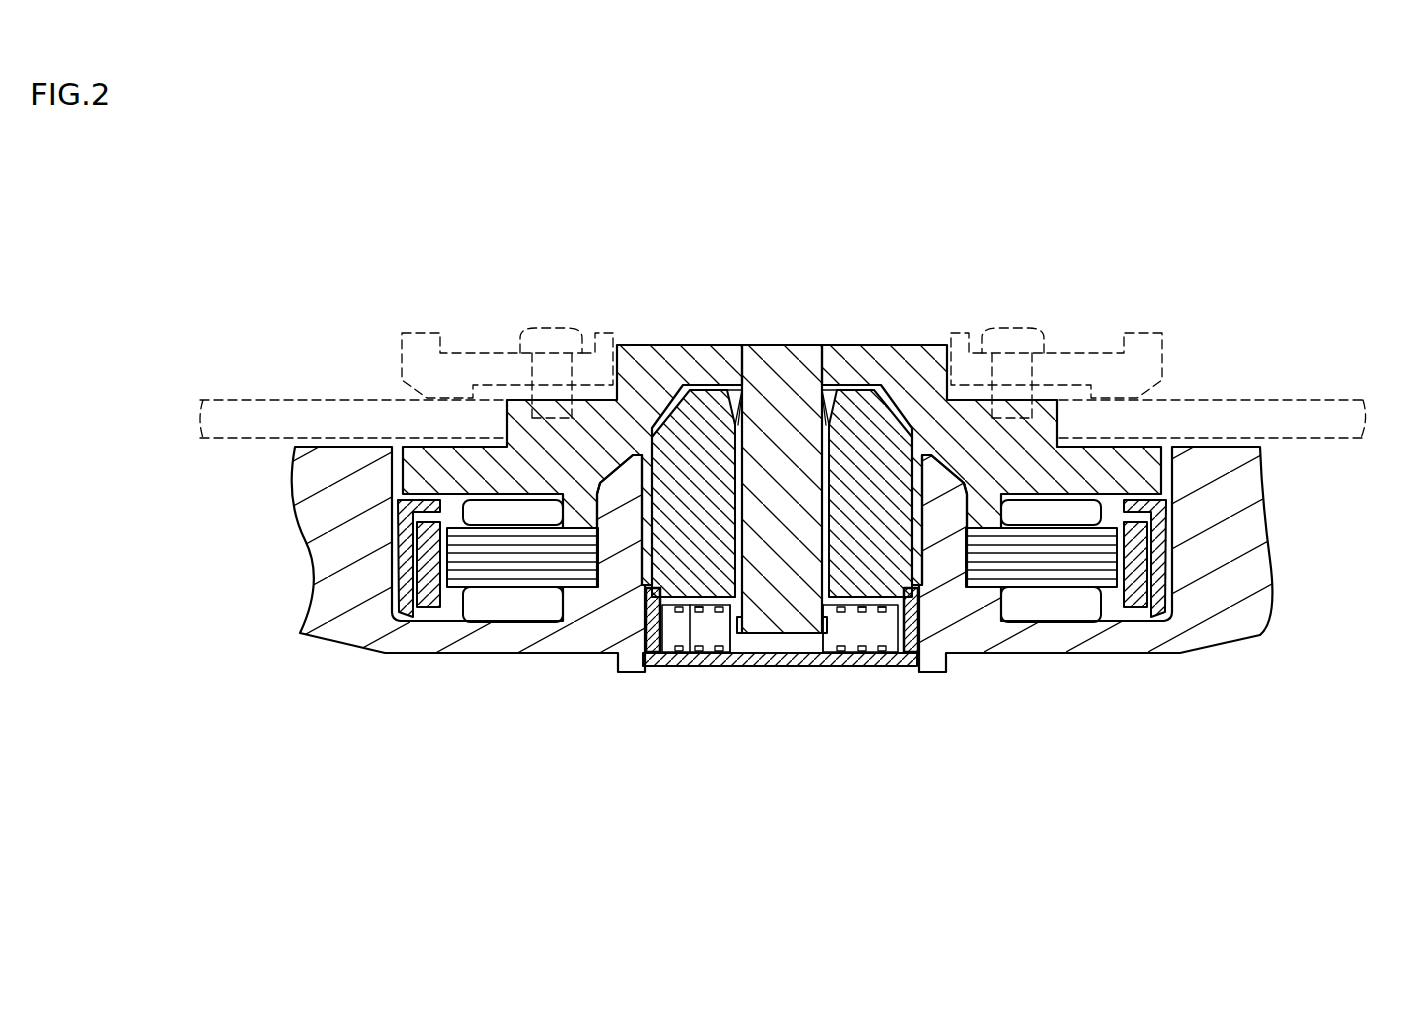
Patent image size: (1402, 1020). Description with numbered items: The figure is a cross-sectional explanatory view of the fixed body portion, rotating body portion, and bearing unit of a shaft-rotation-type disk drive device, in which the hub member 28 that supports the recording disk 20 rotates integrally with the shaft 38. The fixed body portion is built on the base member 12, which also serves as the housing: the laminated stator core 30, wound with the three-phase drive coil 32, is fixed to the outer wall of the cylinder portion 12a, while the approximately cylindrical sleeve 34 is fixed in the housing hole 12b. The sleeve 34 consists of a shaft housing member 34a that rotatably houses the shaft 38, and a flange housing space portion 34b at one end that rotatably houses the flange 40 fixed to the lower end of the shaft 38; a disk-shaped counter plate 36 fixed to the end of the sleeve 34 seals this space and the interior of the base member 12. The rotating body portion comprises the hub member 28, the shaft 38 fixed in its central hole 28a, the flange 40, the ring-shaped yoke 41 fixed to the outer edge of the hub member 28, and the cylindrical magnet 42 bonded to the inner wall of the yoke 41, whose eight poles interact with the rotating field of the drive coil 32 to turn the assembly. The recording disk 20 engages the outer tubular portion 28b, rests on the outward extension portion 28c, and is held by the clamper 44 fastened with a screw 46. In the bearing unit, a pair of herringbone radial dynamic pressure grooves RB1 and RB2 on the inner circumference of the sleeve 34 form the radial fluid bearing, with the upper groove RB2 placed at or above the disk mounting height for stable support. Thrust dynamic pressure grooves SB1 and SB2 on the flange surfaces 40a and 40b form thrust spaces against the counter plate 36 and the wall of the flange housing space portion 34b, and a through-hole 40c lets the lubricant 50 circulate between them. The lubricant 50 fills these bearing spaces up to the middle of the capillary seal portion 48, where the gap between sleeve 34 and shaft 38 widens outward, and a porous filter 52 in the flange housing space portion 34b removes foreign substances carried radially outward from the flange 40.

The base member 12 is at (1240, 497).
The cylinder portion 12a is at (612, 512).
The housing hole 12b is at (935, 600).
The recording disk 20 is at (1311, 412).
The hub member 28 is at (922, 372).
The central hole 28a is at (751, 360).
The outer tubular portion 28b is at (1080, 507).
The outward extension portion 28c is at (1115, 418).
The stator core 30 is at (470, 563).
The drive coil 32 is at (485, 512).
The sleeve 34 is at (676, 449).
The shaft housing member 34a is at (700, 428).
The flange housing space portion 34b is at (668, 605).
The counter plate 36 is at (759, 666).
The shaft 38 is at (796, 357).
The flange 40 is at (812, 640).
The surface of the flange 40a is at (880, 612).
The surface of the flange 40b is at (868, 600).
The through-hole 40c is at (697, 612).
The yoke 41 is at (1158, 597).
The magnet 42 is at (430, 592).
The clamper 44 is at (467, 366).
The screw 46 is at (547, 337).
The capillary seal portion 48 is at (733, 392).
The lubricant 50 is at (830, 555).
The porous filter 52 is at (653, 620).
The radial dynamic pressure groove RB1 is at (832, 420).
The radial dynamic pressure groove RB2 is at (821, 440).
The thrust dynamic pressure groove SB1 is at (727, 620).
The thrust dynamic pressure groove SB2 is at (827, 607).